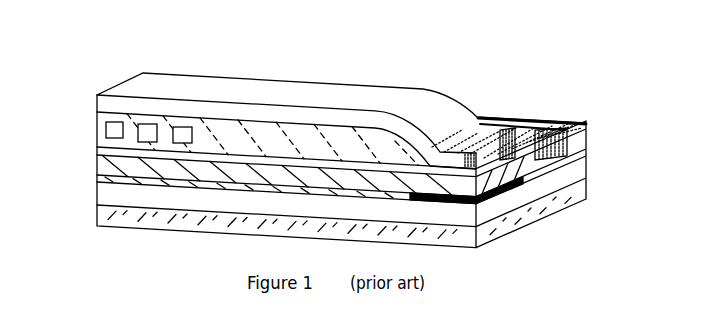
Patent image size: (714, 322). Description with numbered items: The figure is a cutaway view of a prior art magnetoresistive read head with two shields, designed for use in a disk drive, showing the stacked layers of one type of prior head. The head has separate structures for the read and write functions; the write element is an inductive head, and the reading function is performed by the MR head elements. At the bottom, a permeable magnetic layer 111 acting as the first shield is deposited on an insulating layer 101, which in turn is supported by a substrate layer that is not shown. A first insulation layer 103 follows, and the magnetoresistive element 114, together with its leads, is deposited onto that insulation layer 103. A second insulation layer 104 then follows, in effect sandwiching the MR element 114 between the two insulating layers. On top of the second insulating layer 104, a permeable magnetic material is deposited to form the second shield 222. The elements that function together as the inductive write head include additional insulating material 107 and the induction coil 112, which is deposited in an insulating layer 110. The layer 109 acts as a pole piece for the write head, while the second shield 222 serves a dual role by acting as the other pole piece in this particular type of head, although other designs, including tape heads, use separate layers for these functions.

The insulating layer 101 is at (167, 222).
The first insulation layer 103 is at (100, 186).
The second insulation layer 104 is at (102, 177).
The insulating material 107 is at (505, 150).
The pole piece layer 109 is at (520, 145).
The insulating layer 110 is at (250, 131).
The permeable magnetic layer 111 is at (105, 200).
The induction coil 112 is at (105, 128).
The magnetoresistive element 114 is at (502, 197).
The second shield 222 is at (532, 162).